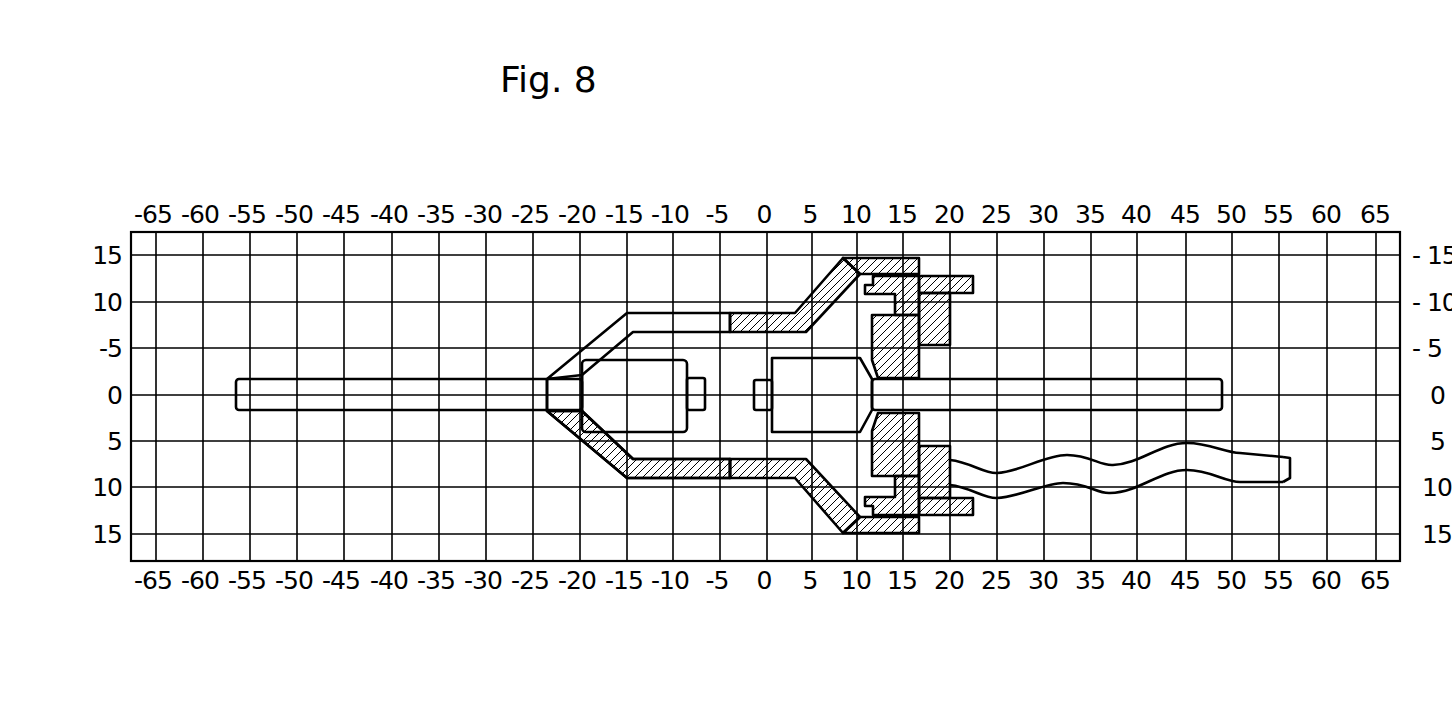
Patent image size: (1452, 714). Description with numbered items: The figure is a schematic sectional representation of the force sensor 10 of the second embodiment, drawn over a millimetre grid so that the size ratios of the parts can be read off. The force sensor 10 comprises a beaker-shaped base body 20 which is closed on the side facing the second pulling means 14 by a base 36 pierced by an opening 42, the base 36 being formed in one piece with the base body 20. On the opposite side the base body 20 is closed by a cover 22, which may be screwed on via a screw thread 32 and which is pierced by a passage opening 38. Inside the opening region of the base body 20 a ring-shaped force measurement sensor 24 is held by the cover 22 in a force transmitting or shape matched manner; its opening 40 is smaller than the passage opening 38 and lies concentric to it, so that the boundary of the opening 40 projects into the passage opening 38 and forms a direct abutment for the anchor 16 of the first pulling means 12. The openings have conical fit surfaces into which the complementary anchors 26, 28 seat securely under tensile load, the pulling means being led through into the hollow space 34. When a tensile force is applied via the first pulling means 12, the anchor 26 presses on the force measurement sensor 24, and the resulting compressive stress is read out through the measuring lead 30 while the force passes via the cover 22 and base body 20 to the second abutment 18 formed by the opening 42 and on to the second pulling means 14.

The force sensor 10 is at (692, 598).
The first pulling means 12 is at (1200, 380).
The second pulling means 14 is at (320, 384).
The anchor 16 is at (950, 327).
The second abutment 18 is at (608, 438).
The base body 20 is at (787, 313).
The cover 22 is at (940, 288).
The force measurement sensor 24 is at (848, 533).
The anchor 26 is at (787, 418).
The anchor 28 is at (647, 373).
The measuring lead 30 is at (1207, 462).
The screw thread 32 is at (915, 273).
The hollow space 34 is at (740, 422).
The base 36 is at (608, 438).
The passage opening 38 is at (905, 515).
The opening 40 is at (925, 435).
The opening 42 is at (563, 413).